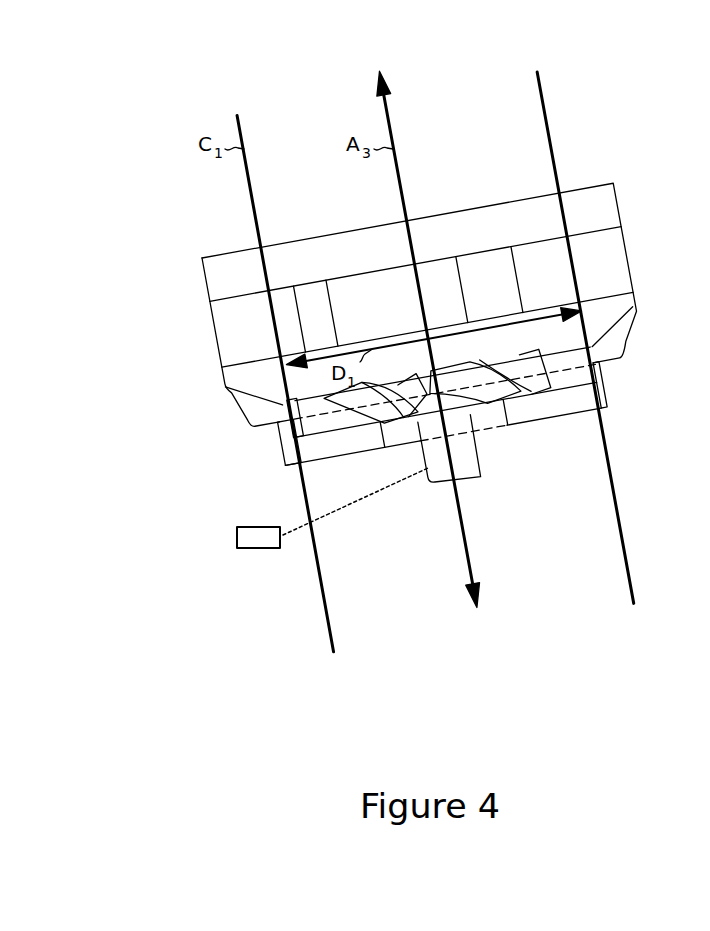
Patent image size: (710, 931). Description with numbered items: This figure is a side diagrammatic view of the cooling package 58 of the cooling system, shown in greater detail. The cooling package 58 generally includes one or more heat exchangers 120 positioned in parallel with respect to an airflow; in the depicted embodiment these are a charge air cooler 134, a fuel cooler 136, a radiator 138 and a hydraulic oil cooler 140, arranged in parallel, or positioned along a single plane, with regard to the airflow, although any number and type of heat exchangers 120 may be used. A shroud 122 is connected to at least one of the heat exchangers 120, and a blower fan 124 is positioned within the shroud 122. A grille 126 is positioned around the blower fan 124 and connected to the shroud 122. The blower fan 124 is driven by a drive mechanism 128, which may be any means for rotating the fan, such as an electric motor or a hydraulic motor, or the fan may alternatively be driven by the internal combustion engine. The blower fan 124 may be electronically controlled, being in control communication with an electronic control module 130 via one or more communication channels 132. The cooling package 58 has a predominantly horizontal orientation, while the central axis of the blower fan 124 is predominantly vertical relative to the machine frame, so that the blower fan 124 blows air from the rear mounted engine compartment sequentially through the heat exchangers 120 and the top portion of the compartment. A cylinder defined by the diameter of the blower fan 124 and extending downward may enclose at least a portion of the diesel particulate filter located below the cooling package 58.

The cooling package 58 is at (603, 172).
The heat exchangers 120 is at (310, 290).
The shroud 122 is at (628, 307).
The blower fan 124 is at (330, 412).
The grille 126 is at (602, 397).
The drive mechanism 128 is at (442, 494).
The electronic control module 130 is at (237, 537).
The communication channels 132 is at (290, 528).
The charge air cooler 134 is at (231, 315).
The fuel cooler 136 is at (320, 315).
The radiator 138 is at (460, 292).
The hydraulic oil cooler 140 is at (612, 247).